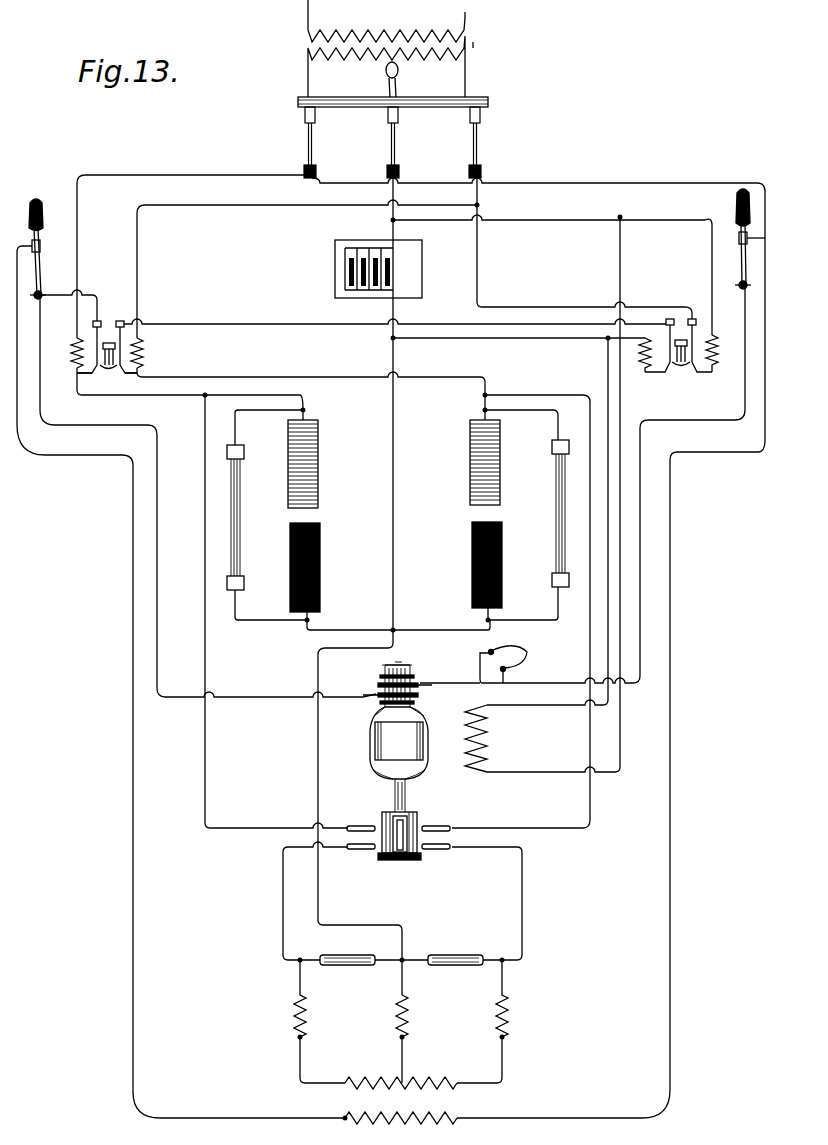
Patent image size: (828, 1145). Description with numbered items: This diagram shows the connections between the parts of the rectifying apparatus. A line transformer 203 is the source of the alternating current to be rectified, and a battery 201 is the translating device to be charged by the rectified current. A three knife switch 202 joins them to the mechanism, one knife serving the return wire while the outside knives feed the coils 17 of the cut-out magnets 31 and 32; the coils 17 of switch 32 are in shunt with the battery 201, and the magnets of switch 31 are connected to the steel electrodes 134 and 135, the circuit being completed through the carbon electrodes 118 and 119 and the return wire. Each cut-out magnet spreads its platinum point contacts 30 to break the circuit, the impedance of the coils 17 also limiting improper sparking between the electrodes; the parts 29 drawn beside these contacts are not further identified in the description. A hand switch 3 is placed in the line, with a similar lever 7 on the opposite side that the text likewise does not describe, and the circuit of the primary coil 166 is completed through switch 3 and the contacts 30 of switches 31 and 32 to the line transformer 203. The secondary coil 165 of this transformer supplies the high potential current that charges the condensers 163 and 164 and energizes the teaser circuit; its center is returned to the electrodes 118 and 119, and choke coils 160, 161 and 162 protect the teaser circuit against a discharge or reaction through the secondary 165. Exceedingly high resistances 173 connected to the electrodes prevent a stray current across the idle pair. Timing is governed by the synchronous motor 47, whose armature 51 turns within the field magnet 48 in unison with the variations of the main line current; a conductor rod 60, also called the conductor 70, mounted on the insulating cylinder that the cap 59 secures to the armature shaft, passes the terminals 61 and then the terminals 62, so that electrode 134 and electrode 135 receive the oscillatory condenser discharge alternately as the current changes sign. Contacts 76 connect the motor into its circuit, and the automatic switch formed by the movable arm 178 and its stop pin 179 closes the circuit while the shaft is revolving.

The line transformer 203 is at (390, 48).
The three knife switch 202 is at (397, 150).
The battery 201 is at (422, 274).
The switch 3 is at (40, 283).
The operating lever 7 is at (743, 239).
The cut-out magnet switch 31 is at (383, 331).
The cut-out magnet switch 32 is at (678, 327).
The actuating magnet coil 17 is at (660, 342).
The base connection 29 is at (77, 376).
The platinum point contacts 30 is at (391, 368).
The steel electrode wheel 134 is at (288, 478).
The steel electrode wheel 135 is at (500, 490).
The high resistance 173 is at (255, 540).
The carbon ring electrode 118 is at (290, 575).
The carbon ring electrode 119 is at (502, 584).
The movable arm 178 is at (508, 649).
The stop pin contact 179 is at (508, 669).
The contacts 76 is at (418, 676).
The synchronous motor 47 is at (392, 772).
The armature 51 is at (416, 742).
The field magnet 48 is at (488, 738).
The conductor 70 is at (397, 830).
The conductor rod 60 is at (410, 822).
The terminals 61 is at (355, 822).
The terminals 62 is at (445, 824).
The cap 59 is at (414, 866).
The condenser 163 is at (345, 965).
The condenser 164 is at (452, 965).
The choke coil 160 is at (294, 1016).
The choke coil 161 is at (408, 1022).
The choke coil 162 is at (508, 1022).
The secondary coil 165 is at (397, 1069).
The primary coil 166 is at (455, 1110).